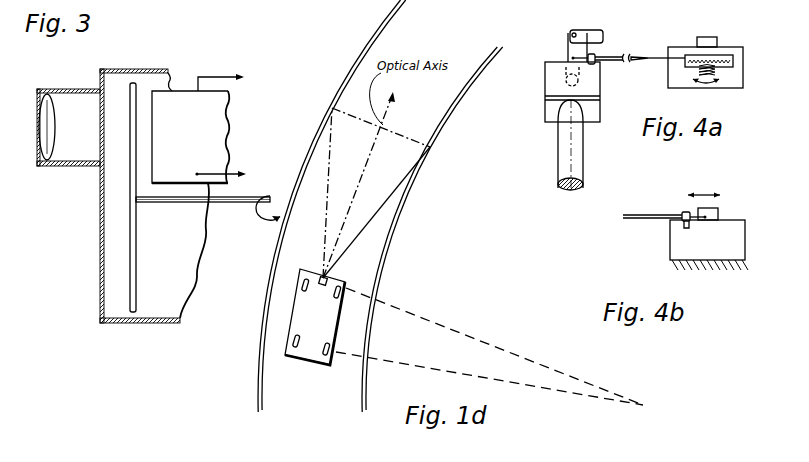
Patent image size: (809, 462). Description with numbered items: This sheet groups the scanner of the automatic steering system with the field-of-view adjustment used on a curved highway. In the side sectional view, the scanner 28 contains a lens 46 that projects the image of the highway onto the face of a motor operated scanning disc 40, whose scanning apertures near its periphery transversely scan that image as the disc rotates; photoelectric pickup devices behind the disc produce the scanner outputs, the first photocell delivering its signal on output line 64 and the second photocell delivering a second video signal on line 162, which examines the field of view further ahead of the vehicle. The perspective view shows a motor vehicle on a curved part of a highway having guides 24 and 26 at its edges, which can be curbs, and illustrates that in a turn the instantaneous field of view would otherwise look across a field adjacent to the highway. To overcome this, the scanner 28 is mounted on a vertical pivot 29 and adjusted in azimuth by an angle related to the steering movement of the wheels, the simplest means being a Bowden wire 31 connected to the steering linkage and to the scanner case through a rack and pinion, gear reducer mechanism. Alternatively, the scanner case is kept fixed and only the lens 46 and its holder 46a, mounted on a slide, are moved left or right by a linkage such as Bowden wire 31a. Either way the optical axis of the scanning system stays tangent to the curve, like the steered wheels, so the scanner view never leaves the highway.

In FIG. 3, the scanner 28 is at (131, 68).
In FIG. 1D, the scanner 28 is at (318, 284).
In FIG. 4A, the scanner 28 is at (738, 56).
In FIG. 4B, the scanner 28 is at (733, 243).
In FIG. 3, the lens 46 is at (54, 131).
In FIG. 3, the scanning disc 40 is at (137, 280).
In FIG. 3, the line 162 is at (208, 172).
In FIG. 3, the output line 64 is at (210, 76).
In FIG. 1D, the guide 24 is at (262, 326).
In FIG. 1D, the guide 26 is at (368, 385).
In FIG. 4A, the Bowden wire 31 is at (618, 65).
In FIG. 4A, the vertical pivot 29 is at (715, 72).
In FIG. 4B, the lens holder 46a is at (720, 211).
In FIG. 4B, the Bowden wire 31a is at (652, 220).